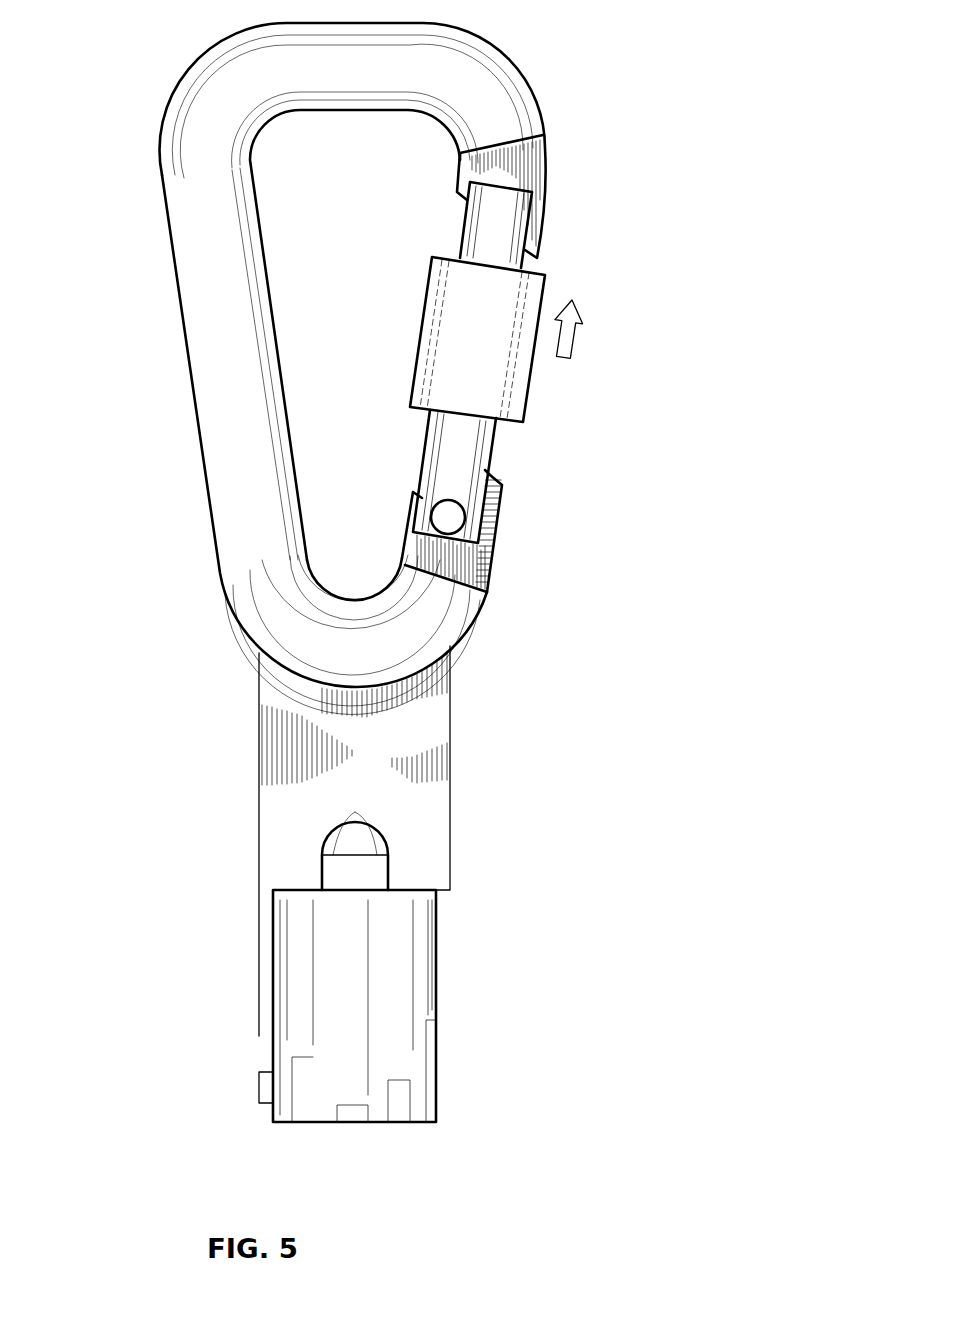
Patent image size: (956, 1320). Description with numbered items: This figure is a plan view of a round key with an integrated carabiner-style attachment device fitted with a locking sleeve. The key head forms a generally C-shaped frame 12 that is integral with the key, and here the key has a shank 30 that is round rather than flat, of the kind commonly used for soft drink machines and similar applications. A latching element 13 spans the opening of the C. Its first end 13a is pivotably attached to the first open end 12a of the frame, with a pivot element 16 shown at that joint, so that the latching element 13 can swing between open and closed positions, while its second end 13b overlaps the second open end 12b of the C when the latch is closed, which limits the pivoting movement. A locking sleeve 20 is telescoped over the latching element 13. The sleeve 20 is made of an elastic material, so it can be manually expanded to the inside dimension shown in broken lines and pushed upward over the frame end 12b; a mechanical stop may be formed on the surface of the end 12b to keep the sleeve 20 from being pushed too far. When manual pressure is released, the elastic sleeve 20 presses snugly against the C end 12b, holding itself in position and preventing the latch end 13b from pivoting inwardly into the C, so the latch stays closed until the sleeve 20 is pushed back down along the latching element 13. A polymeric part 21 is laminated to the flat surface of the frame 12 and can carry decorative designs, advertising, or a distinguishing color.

The C-shaped frame 12 is at (160, 183).
The first open end of the C 12a is at (492, 567).
The second open end of the C 12b is at (547, 152).
The latching element 13 is at (428, 443).
The first end of the latching element 13a is at (487, 493).
The second end of the latching element 13b is at (463, 227).
The pivot pin 16 is at (465, 520).
The locking sleeve 20 is at (425, 307).
The polymeric part 21 is at (236, 302).
The shank 30 is at (436, 990).